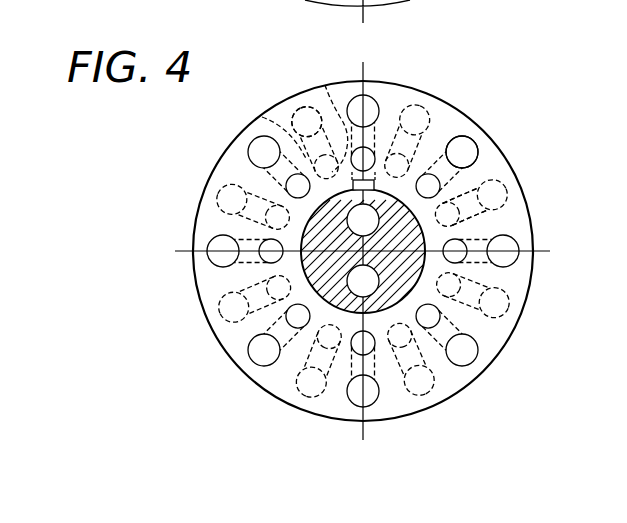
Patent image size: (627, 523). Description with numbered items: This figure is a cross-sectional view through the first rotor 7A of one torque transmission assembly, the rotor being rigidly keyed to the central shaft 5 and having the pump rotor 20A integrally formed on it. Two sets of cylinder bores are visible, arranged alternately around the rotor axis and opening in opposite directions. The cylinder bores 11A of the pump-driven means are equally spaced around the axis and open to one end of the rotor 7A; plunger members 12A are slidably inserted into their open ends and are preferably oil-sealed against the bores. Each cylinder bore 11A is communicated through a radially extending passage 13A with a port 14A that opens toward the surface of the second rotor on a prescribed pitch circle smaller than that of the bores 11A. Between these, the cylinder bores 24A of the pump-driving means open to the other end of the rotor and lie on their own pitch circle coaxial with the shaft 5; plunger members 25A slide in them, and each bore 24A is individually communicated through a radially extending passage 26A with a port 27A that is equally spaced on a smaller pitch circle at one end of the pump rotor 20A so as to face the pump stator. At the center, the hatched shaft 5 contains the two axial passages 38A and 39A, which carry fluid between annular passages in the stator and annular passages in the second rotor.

The shaft 5 is at (382, 308).
The first rotor 7A is at (406, 251).
The pump rotor 20A is at (498, 357).
The cylinder bores 11A is at (462, 135).
The plunger members 12A is at (375, 102).
The radially extending passages 13A is at (497, 156).
The ports 14A is at (425, 174).
The cylinder bores 24A is at (308, 105).
The plunger members 25A is at (290, 113).
The radially extending passages 26A is at (262, 117).
The ports 27A is at (325, 85).
The axial passage 38A is at (372, 232).
The axial passage 39A is at (378, 262).